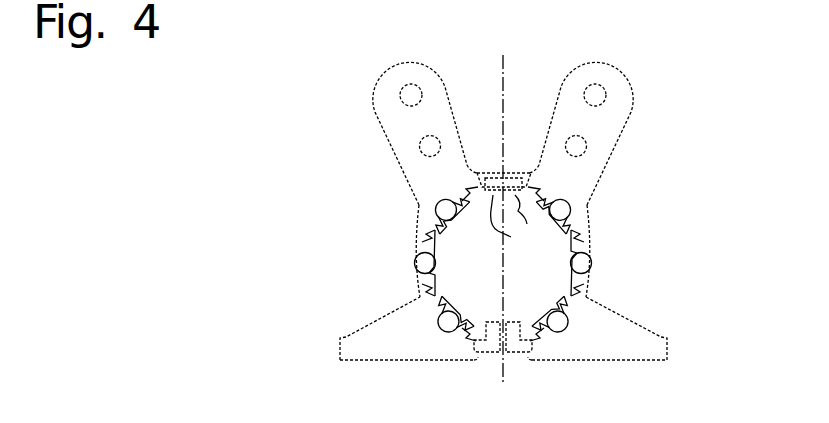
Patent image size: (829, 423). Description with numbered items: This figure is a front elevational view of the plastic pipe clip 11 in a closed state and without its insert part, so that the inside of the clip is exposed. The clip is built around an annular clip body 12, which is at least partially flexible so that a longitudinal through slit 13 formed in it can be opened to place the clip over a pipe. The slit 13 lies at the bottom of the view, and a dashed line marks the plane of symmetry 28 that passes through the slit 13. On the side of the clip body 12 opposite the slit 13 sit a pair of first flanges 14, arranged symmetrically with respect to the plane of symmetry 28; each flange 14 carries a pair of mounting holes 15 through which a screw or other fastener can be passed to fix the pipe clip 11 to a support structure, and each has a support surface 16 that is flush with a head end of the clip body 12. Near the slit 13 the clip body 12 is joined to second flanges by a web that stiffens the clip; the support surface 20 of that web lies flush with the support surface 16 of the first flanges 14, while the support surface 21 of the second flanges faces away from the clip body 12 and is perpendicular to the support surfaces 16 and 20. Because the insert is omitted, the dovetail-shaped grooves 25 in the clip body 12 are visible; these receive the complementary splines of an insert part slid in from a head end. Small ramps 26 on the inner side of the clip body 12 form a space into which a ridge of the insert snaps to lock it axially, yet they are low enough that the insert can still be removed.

The pipe clip 11 is at (485, 222).
The annular clip body 12 is at (584, 242).
The longitudinal through slit 13 is at (511, 372).
The first flanges 14 is at (427, 78).
The mounting holes 15 is at (428, 146).
The support surface 16 is at (419, 127).
The support surface of the web 20 is at (375, 349).
The support surface of the second flanges 21 is at (392, 368).
The grooves 25 is at (524, 190).
The ramp 26 is at (509, 210).
The plane of symmetry 28 is at (503, 57).